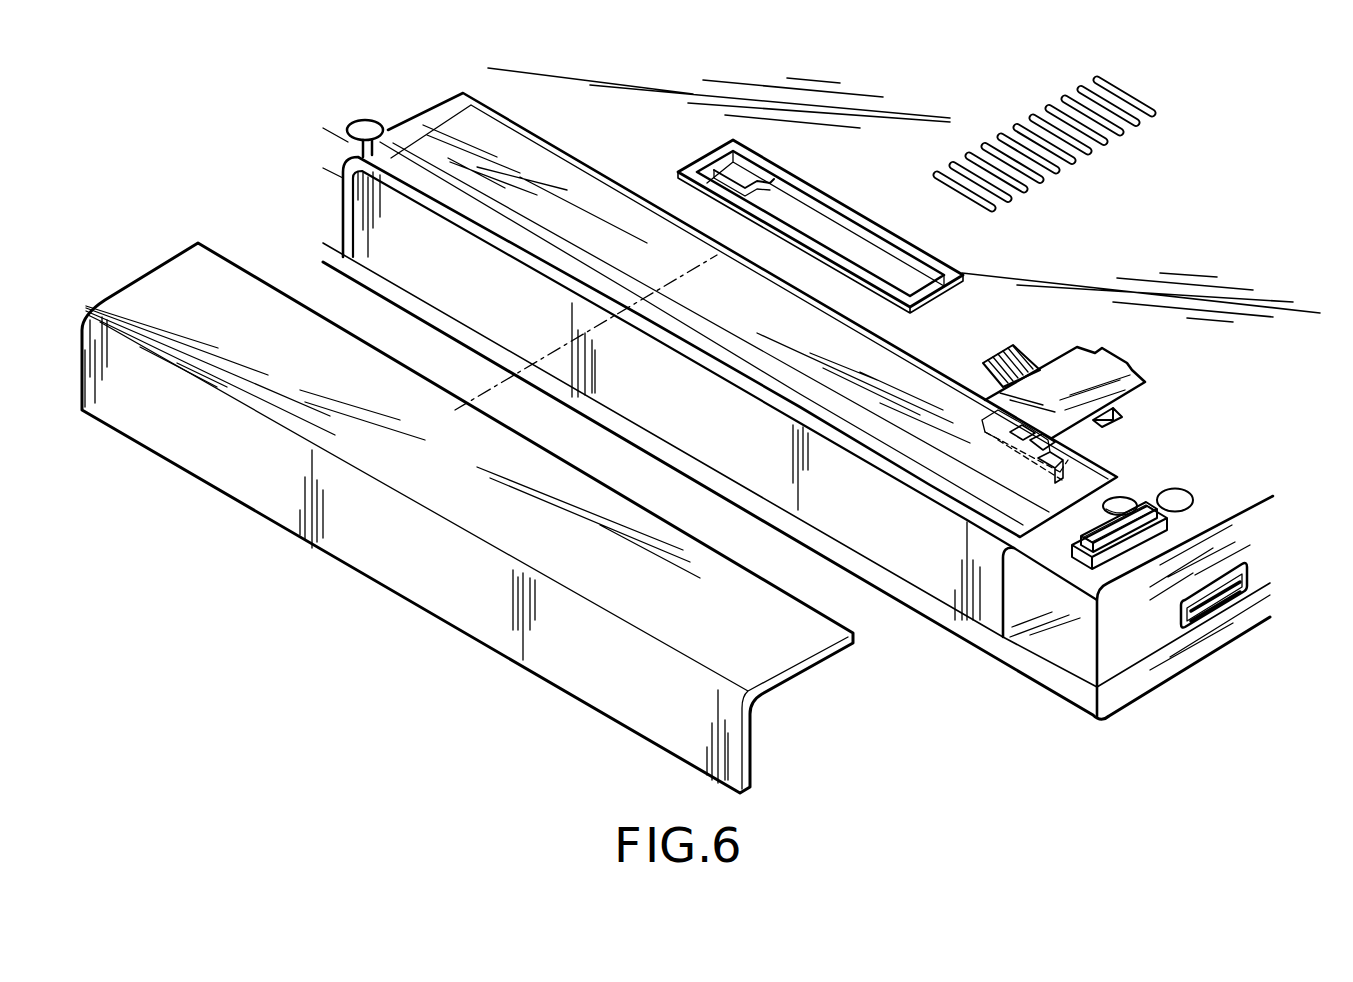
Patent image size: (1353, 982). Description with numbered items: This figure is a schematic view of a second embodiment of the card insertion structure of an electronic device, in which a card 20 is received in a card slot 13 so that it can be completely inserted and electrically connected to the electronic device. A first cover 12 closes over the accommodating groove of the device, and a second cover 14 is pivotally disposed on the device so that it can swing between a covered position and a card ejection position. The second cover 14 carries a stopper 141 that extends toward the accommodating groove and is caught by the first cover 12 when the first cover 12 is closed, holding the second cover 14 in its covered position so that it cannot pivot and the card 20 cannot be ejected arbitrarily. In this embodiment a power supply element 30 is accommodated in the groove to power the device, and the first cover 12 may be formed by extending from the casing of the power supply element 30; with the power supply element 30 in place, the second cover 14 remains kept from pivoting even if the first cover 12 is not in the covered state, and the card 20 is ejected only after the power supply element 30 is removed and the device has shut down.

The first cover 12 is at (450, 582).
The card slot 13 is at (982, 422).
The second cover 14 is at (1145, 398).
The stopper 141 is at (1103, 428).
The card 20 is at (1073, 440).
The power supply element 30 is at (523, 237).